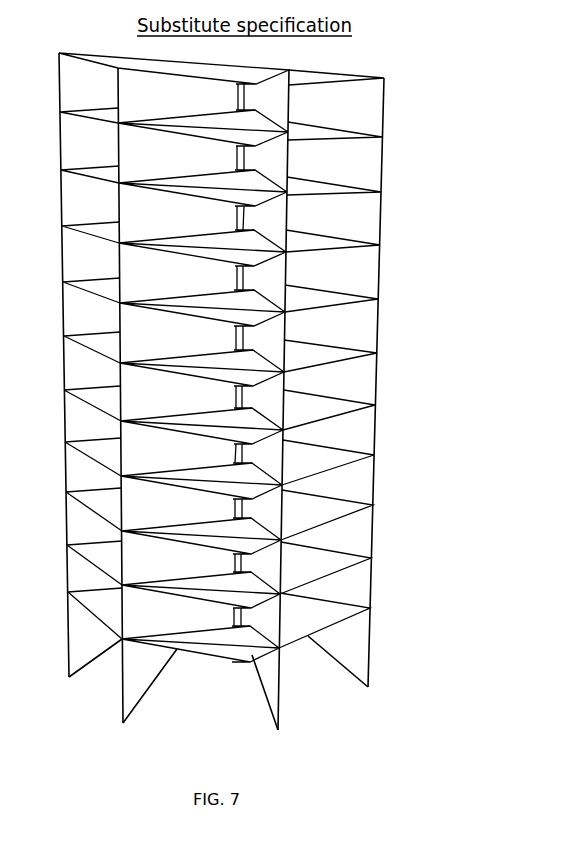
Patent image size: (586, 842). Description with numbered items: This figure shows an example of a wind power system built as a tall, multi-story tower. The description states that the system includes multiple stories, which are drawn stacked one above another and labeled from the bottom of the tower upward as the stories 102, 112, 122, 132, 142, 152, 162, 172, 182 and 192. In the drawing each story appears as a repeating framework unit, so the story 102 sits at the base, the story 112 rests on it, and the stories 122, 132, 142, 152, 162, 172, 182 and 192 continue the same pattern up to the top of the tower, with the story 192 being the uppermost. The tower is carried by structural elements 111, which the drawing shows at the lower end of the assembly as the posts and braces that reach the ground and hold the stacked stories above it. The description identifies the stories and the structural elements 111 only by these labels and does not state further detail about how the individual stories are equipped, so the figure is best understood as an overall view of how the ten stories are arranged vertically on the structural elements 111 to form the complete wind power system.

The story 192 is at (438, 98).
The story 182 is at (431, 151).
The story 172 is at (418, 207).
The story 162 is at (428, 262).
The story 152 is at (418, 316).
The story 142 is at (408, 370).
The story 132 is at (401, 415).
The story 122 is at (393, 468).
The story 112 is at (383, 524).
The story 102 is at (393, 578).
The structural elements 111 is at (368, 687).